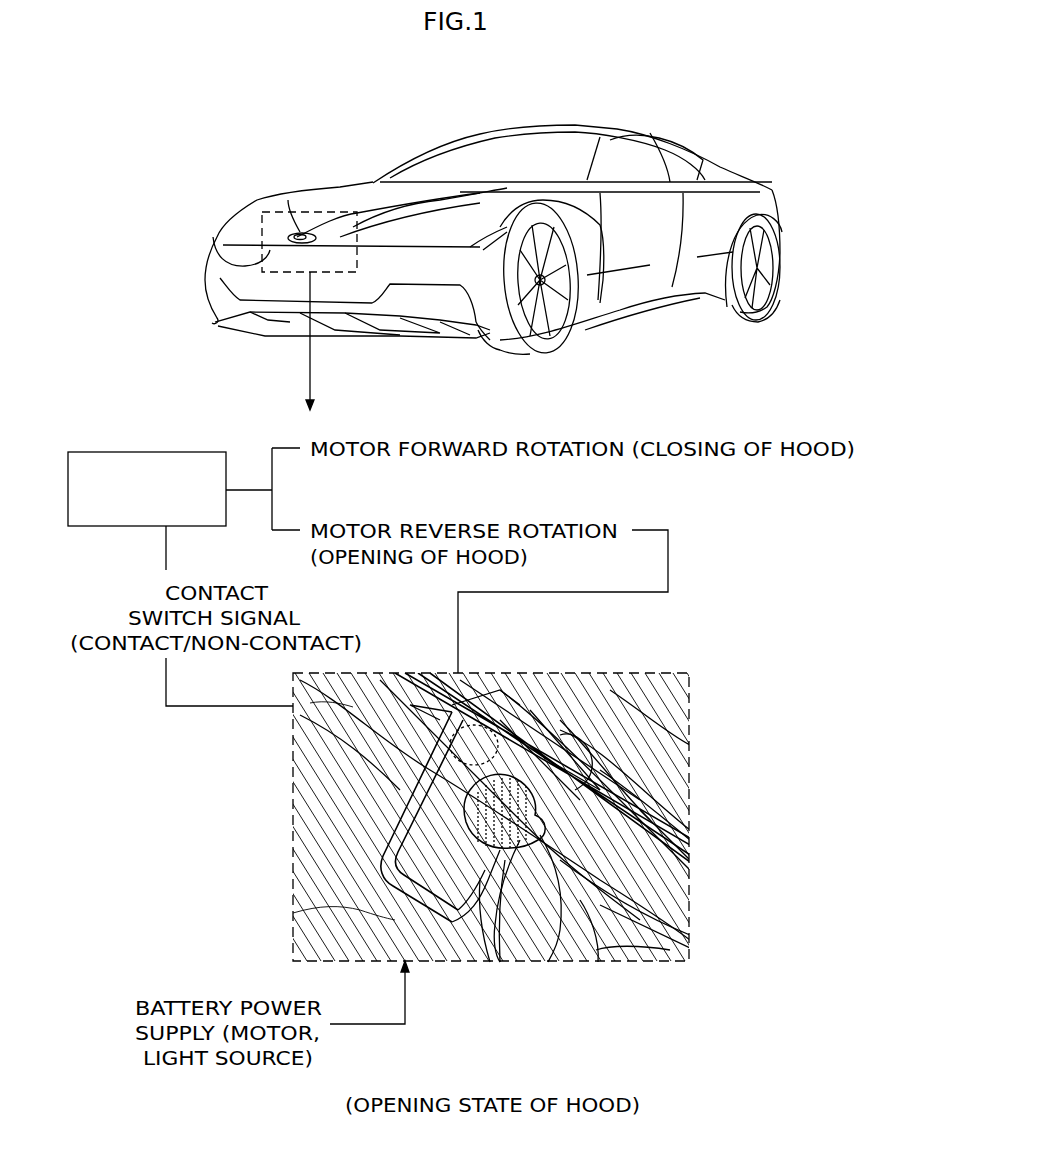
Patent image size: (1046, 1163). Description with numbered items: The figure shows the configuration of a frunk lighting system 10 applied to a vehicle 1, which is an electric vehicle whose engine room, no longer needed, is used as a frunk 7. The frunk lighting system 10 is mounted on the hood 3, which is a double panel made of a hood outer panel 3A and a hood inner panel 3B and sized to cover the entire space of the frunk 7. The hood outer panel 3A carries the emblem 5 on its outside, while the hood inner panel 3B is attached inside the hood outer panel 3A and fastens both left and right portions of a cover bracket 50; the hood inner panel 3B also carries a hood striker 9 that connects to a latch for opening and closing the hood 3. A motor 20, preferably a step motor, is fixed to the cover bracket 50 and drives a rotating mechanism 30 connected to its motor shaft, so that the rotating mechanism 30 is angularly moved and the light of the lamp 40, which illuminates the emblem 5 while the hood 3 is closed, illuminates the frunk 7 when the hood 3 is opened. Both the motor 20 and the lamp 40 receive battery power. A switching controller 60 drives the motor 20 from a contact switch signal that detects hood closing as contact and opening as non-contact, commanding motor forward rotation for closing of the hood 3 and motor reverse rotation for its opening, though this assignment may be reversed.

The vehicle 1 is at (700, 210).
The hood 3 is at (420, 202).
The hood outer panel 3A is at (666, 805).
The hood inner panel 3B is at (650, 938).
The emblem 5 is at (298, 230).
The frunk 7 is at (596, 960).
The hood striker 9 is at (390, 864).
The frunk lighting system 10 is at (207, 260).
The motor 20 is at (486, 725).
The rotating mechanism 30 is at (536, 950).
The lamp 40 is at (502, 955).
The cover bracket 50 is at (390, 735).
The switching controller 60 is at (166, 452).